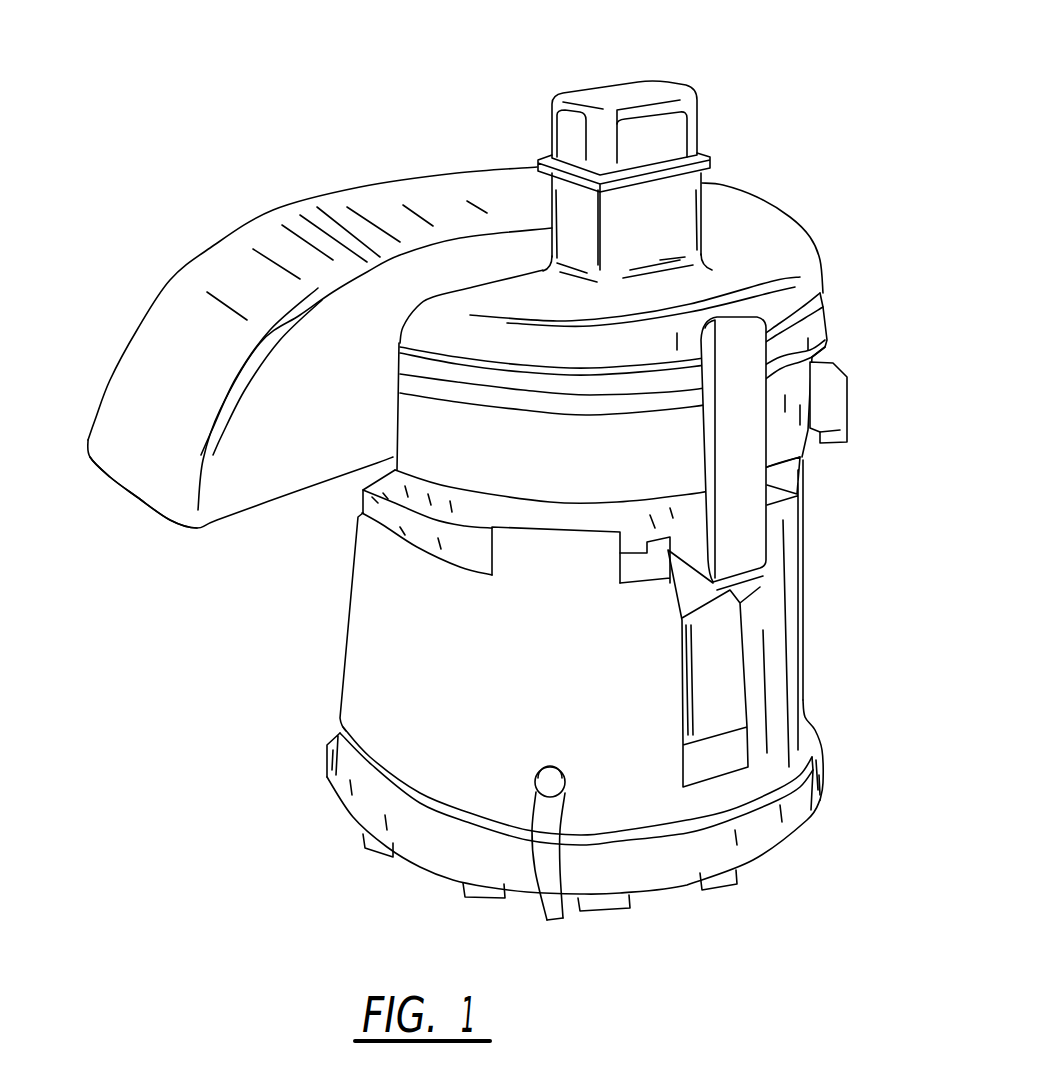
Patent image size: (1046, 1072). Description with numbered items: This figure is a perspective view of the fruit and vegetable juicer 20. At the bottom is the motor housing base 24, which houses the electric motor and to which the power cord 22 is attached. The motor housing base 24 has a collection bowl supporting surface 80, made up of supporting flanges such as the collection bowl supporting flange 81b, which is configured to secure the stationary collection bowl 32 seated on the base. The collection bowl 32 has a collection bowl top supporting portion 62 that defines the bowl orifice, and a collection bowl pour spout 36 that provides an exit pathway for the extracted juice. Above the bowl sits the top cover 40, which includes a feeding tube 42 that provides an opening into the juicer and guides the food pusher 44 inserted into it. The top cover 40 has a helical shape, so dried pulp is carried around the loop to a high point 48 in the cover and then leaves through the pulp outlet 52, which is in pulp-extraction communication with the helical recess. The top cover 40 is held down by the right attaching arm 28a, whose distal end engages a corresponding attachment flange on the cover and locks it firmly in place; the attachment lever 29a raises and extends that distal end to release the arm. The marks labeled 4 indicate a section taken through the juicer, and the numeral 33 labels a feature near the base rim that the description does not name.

The fruit and vegetable juicer 20 is at (477, 478).
The section line 4- 4 is at (84, 403).
The high point 48 is at (273, 214).
The pulp outlet 52 is at (168, 506).
The food pusher 44 is at (638, 150).
The feeding tube 42 is at (635, 233).
The top cover 40 is at (646, 343).
The collection bowl top supporting portion 62 is at (816, 358).
The collection bowl pour spout 36 is at (846, 400).
The collection bowl 32 is at (570, 465).
The right attaching arm 28a is at (740, 492).
The collection bowl supporting surface 80 is at (367, 507).
The base rim 33 is at (477, 522).
The collection bowl supporting flange 81b is at (523, 557).
The attachment lever 29a is at (737, 650).
The motor housing base 24 is at (497, 703).
The power cord 22 is at (547, 907).